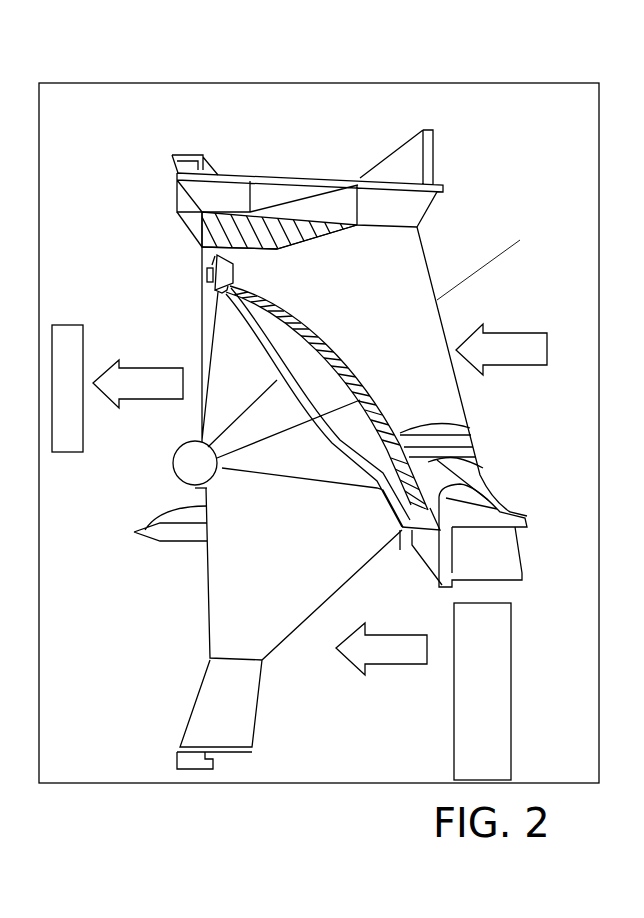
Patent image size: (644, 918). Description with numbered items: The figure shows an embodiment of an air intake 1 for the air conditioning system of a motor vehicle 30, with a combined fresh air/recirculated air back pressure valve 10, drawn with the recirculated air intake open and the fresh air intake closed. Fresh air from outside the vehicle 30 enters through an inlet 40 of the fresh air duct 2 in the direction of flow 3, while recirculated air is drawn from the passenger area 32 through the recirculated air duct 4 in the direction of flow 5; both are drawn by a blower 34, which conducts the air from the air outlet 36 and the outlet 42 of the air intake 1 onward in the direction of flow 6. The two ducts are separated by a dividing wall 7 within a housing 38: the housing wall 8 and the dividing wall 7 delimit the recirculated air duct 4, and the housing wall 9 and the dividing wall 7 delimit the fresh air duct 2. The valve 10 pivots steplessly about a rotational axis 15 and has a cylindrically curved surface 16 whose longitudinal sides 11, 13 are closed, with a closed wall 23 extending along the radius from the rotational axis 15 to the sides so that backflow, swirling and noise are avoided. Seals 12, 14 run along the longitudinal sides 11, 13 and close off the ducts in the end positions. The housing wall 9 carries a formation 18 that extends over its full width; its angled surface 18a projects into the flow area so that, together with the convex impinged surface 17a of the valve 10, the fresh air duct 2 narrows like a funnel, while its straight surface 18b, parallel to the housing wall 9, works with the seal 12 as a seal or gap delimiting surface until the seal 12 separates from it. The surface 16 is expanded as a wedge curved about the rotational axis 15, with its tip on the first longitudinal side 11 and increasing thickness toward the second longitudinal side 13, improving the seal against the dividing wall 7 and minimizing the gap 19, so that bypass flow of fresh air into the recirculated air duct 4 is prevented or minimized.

The air intake 1 is at (508, 188).
The fresh air duct 2 is at (423, 268).
The direction of flow 3 is at (517, 335).
The recirculated air duct 4 is at (296, 640).
The direction of flow 5 is at (395, 658).
The direction of flow 6 is at (113, 401).
The dividing wall 7 is at (527, 519).
The housing wall 8 is at (250, 750).
The housing wall 9 is at (188, 154).
The valve 10 is at (203, 350).
The first longitudinal side 11 is at (203, 293).
The seal 12 is at (204, 261).
The second longitudinal side 13 is at (383, 500).
The seal 14 is at (409, 552).
The rotational axis 15 is at (190, 463).
The cylindrically curved surface 16 is at (320, 335).
The impinged surface 17a is at (470, 428).
The formation 18 is at (295, 245).
The surface 18a is at (293, 230).
The straight surface 18b is at (230, 240).
The gap 19 is at (483, 468).
The closed wall 23 is at (200, 318).
The motor vehicle 30 is at (481, 83).
The passenger area 32 is at (512, 688).
The blower 34 is at (68, 325).
The air outlet 36 is at (134, 532).
The housing 38 is at (317, 174).
The inlet / end face 40 is at (330, 577).
The outlet 42 is at (205, 272).